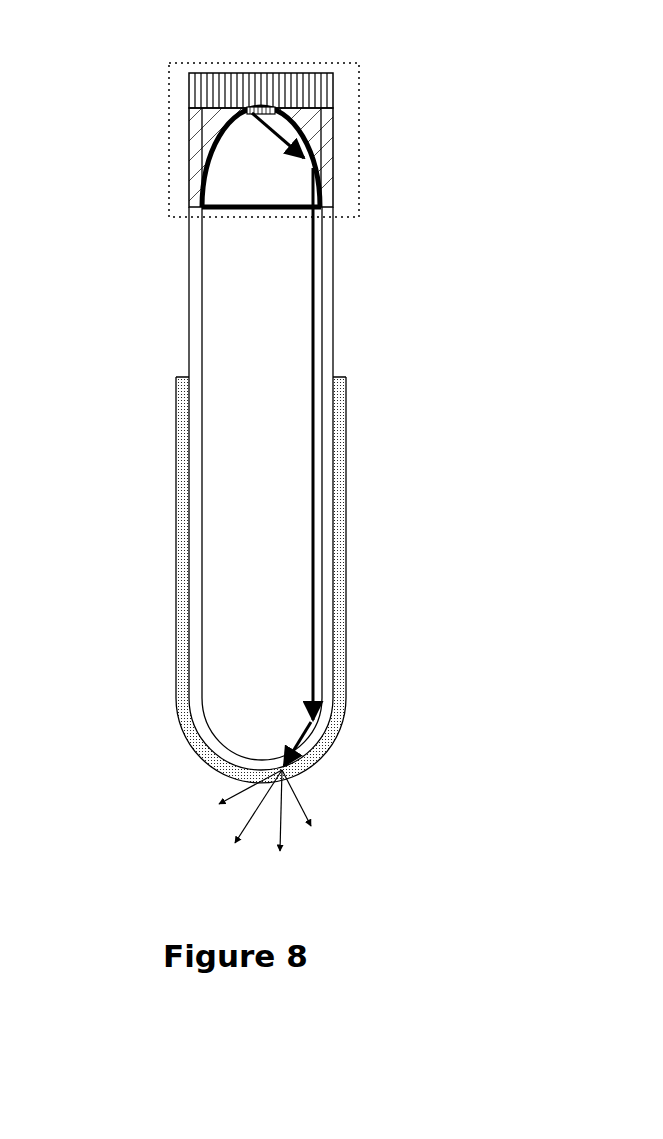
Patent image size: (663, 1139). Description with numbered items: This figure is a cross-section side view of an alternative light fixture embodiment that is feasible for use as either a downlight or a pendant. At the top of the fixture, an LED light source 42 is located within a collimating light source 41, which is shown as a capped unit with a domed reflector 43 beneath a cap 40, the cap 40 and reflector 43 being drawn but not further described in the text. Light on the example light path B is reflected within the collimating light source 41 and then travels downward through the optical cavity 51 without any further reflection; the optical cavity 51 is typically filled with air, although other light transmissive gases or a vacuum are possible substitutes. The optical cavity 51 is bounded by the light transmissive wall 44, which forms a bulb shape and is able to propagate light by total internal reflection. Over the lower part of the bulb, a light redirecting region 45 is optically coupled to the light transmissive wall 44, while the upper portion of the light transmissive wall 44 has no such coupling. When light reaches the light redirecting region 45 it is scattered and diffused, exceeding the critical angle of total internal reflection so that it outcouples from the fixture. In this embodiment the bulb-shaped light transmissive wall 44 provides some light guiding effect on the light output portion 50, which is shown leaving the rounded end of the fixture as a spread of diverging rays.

The cap top / heat sink 40 is at (310, 75).
The collimating light source 41 is at (165, 140).
The LED light source 42 is at (250, 107).
The reflector dome 43 is at (308, 147).
The example light path B is at (287, 137).
The light transmissive wall 44 is at (197, 237).
The optical cavity 51 is at (273, 322).
The light redirecting region 45 is at (338, 415).
The light output portion 50 is at (265, 834).